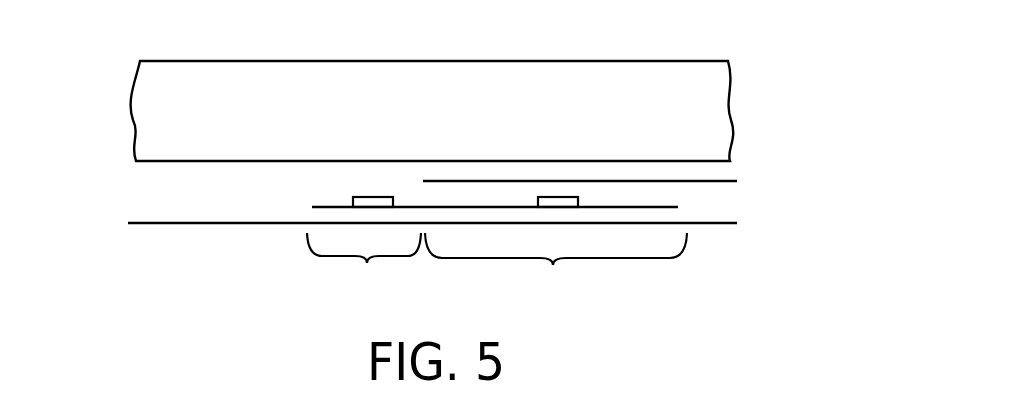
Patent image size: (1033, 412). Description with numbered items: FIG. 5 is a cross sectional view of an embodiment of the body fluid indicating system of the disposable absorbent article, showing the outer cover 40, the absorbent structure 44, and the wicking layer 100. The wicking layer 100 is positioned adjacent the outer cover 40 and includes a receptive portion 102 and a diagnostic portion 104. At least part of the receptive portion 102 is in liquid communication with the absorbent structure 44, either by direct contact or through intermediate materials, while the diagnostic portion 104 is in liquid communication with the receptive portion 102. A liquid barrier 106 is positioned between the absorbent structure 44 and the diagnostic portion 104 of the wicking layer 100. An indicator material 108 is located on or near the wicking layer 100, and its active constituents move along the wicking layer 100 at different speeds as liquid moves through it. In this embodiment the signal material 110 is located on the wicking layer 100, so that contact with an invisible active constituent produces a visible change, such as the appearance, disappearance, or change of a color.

The outer cover 40 is at (160, 223).
The absorbent structure 44 is at (196, 110).
The wicking layer 100 is at (287, 190).
The receptive portion 102 is at (370, 264).
The diagnostic portion 104 is at (553, 265).
The liquid barrier 106 is at (735, 181).
The indicator material 108 is at (367, 197).
The signal material 110 is at (553, 197).